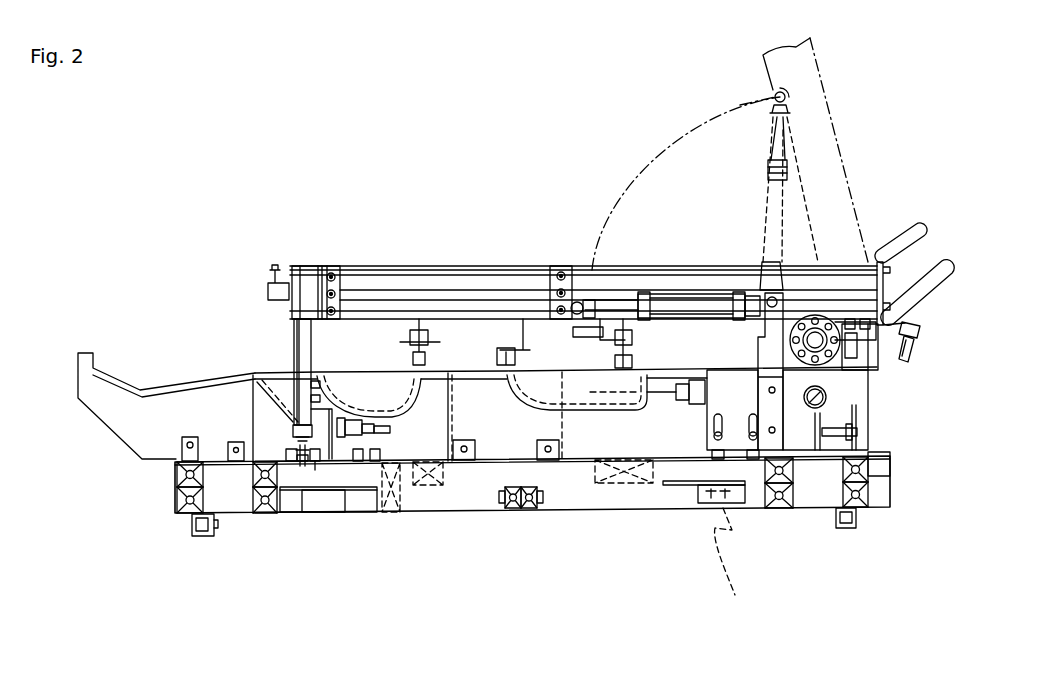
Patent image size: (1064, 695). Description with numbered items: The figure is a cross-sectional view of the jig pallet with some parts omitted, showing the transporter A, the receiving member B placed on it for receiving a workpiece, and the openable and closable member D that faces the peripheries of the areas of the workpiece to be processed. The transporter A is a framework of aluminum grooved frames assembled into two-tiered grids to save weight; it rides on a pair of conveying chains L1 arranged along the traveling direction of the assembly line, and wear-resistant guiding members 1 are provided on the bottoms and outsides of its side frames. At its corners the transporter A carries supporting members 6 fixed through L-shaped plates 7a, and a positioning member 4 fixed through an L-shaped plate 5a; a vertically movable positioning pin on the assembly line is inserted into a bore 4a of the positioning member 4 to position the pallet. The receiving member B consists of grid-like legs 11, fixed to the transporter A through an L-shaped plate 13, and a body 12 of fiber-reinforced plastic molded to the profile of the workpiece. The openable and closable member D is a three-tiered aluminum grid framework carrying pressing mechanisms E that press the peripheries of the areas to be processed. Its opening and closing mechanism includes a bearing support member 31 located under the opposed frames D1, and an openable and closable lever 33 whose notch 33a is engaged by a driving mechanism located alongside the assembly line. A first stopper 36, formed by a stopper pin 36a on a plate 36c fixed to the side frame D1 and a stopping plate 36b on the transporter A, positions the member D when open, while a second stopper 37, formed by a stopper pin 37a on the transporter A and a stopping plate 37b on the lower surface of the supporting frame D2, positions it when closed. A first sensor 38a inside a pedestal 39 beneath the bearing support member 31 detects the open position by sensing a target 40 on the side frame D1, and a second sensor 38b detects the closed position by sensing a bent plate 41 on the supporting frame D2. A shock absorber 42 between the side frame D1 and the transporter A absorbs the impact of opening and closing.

The transporter A is at (905, 488).
The receiving member B is at (183, 363).
The openable and closable member D is at (427, 247).
The opposed frame D1 is at (513, 280).
The supporting frame D2 is at (293, 385).
The pressing mechanism E is at (390, 334).
The guiding member 1 is at (175, 497).
The conveying chain L1 is at (180, 552).
The positioning member 4 is at (700, 492).
The bore 4a is at (742, 565).
The L-shaped plate 5a is at (670, 485).
The supporting member 6 is at (315, 502).
The L-shaped plate 7a is at (305, 452).
The legs 11 is at (140, 412).
The body 12 is at (232, 375).
The L-shaped plate 13 is at (182, 447).
The bearing support member 31 is at (898, 293).
The openable and closable lever 33 is at (890, 248).
The notch 33a is at (850, 311).
The first stopper 36 is at (905, 318).
The stopper pin 36a is at (873, 363).
The stopping plate 36b is at (850, 413).
The plate 36c is at (941, 334).
The second stopper 37 is at (329, 472).
The stopper pin 37a is at (298, 458).
The stopping plate 37b is at (288, 461).
The first sensor 38a is at (747, 437).
The second sensor 38b is at (378, 437).
The pedestal 39 is at (808, 437).
The target 40 is at (877, 385).
The bent plate 41 is at (373, 465).
The shock absorber 42 is at (690, 265).